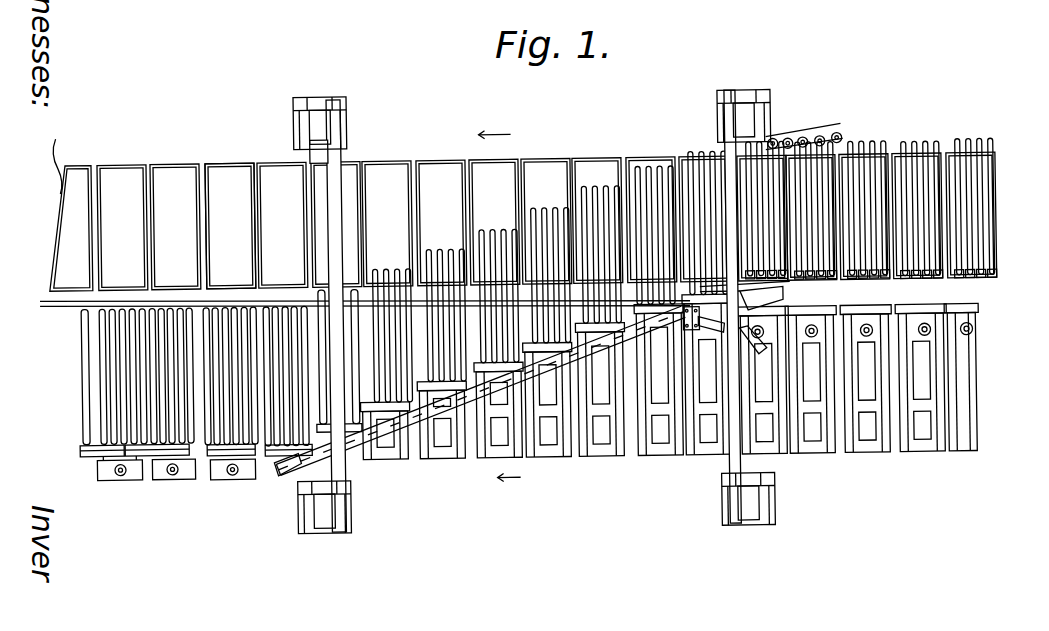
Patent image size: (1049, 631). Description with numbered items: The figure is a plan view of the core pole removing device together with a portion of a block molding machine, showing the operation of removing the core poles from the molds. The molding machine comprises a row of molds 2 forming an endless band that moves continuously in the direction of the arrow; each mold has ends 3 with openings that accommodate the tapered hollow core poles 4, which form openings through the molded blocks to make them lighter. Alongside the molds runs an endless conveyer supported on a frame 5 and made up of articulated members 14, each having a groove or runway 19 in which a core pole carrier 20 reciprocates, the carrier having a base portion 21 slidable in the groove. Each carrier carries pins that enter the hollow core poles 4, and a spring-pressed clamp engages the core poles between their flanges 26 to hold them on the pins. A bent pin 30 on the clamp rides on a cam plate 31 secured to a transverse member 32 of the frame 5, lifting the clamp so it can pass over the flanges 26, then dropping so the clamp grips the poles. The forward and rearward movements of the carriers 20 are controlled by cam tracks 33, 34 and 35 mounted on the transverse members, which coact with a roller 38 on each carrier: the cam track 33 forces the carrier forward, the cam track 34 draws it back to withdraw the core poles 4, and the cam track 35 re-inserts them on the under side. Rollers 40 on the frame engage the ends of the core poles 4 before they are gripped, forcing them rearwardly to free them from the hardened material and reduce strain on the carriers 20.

The molds 2 is at (226, 184).
The mold ends 3 is at (228, 160).
The core poles 4 is at (400, 270).
The frame 5 is at (340, 505).
The articulated conveyer members 14 is at (767, 461).
The grooves or runways 19 is at (697, 345).
The core pole carriers 20 is at (103, 443).
The base portion 21 is at (156, 477).
The flanges 26 is at (972, 289).
The bent pin 30 is at (781, 305).
The cam plate 31 is at (757, 296).
The transverse member 32 is at (726, 148).
The cam track 33 is at (702, 340).
The cam track 34 is at (513, 384).
The cam track 35 is at (292, 481).
The roller 38 is at (931, 343).
The rollers 40 is at (800, 146).